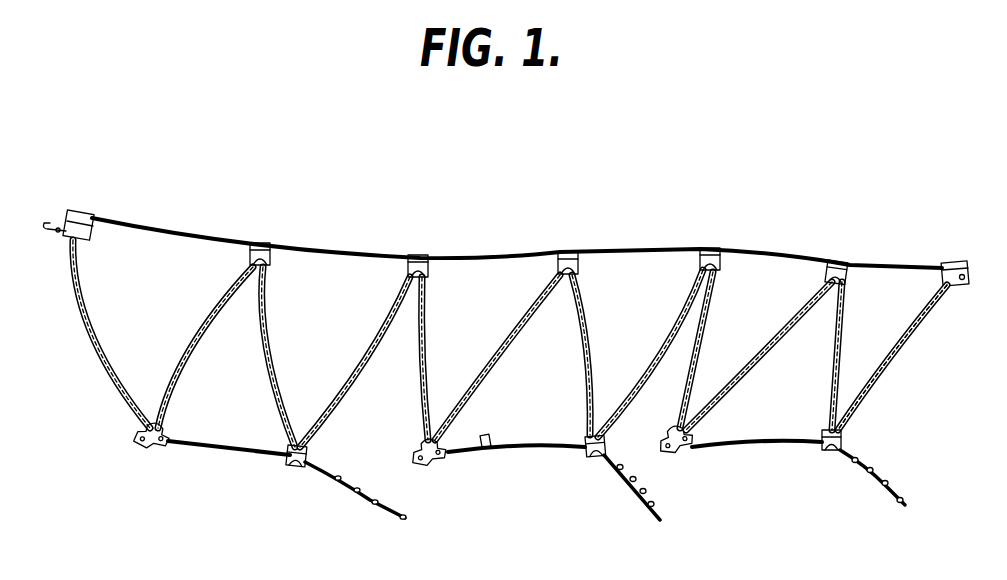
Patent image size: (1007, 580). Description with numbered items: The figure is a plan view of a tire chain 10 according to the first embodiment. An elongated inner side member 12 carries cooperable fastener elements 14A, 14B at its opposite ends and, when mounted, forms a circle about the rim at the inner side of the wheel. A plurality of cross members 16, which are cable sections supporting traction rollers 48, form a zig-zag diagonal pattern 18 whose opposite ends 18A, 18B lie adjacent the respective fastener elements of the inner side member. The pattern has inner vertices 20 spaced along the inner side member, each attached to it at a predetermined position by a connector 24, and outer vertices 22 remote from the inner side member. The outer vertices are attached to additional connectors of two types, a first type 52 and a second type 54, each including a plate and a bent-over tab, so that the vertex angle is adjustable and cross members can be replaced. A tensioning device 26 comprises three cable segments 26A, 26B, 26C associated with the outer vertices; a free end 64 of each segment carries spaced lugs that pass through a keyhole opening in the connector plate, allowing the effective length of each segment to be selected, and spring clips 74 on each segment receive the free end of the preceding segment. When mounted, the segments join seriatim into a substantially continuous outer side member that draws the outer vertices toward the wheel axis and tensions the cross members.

The tire chain 10 is at (649, 210).
The inner side member 12 is at (483, 256).
The fastener element 14A is at (72, 212).
The fastener element 14B is at (967, 263).
The cross members 16 is at (173, 373).
The zig-zag diagonal pattern 18 is at (918, 360).
The end of pattern 18A is at (80, 248).
The end of pattern 18B is at (932, 303).
The inner vertices 20 is at (402, 268).
The outer vertices 22 is at (408, 446).
The connectors 24 is at (554, 268).
The tensioning device 26 is at (316, 488).
The cable segment 26A is at (220, 453).
The cable segment 26B is at (522, 452).
The cable segment 26C is at (770, 447).
The rollers 48 is at (592, 355).
The connector of first type 52 is at (157, 453).
The connector of second type 54 is at (590, 458).
The free end of cable segment 64 is at (386, 512).
The spring clips 74 is at (490, 436).